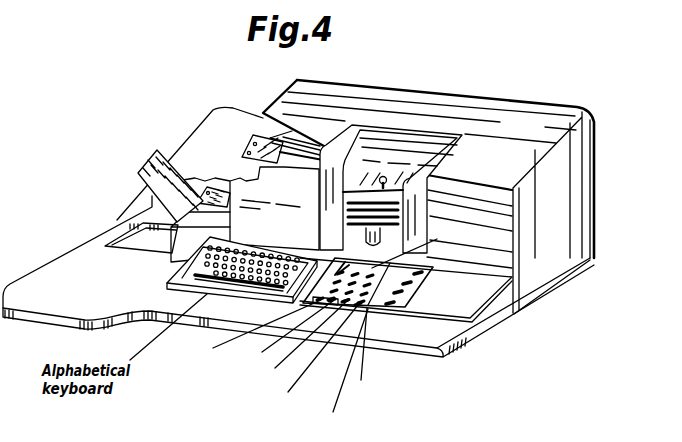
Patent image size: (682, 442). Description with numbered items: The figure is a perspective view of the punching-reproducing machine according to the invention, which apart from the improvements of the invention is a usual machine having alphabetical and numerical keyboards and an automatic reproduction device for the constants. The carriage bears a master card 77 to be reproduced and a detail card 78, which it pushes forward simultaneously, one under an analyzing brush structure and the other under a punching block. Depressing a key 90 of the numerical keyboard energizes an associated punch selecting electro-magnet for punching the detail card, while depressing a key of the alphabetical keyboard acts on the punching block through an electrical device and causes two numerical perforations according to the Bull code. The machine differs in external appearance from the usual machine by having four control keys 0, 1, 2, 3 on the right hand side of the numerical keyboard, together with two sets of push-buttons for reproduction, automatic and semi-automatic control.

The master card 77 is at (256, 138).
The detail card 78 is at (203, 200).
The key 90 is at (371, 283).
The control key 0 is at (418, 273).
The control key 1 is at (407, 283).
The control key 2 is at (398, 292).
The control key 3 is at (390, 303).